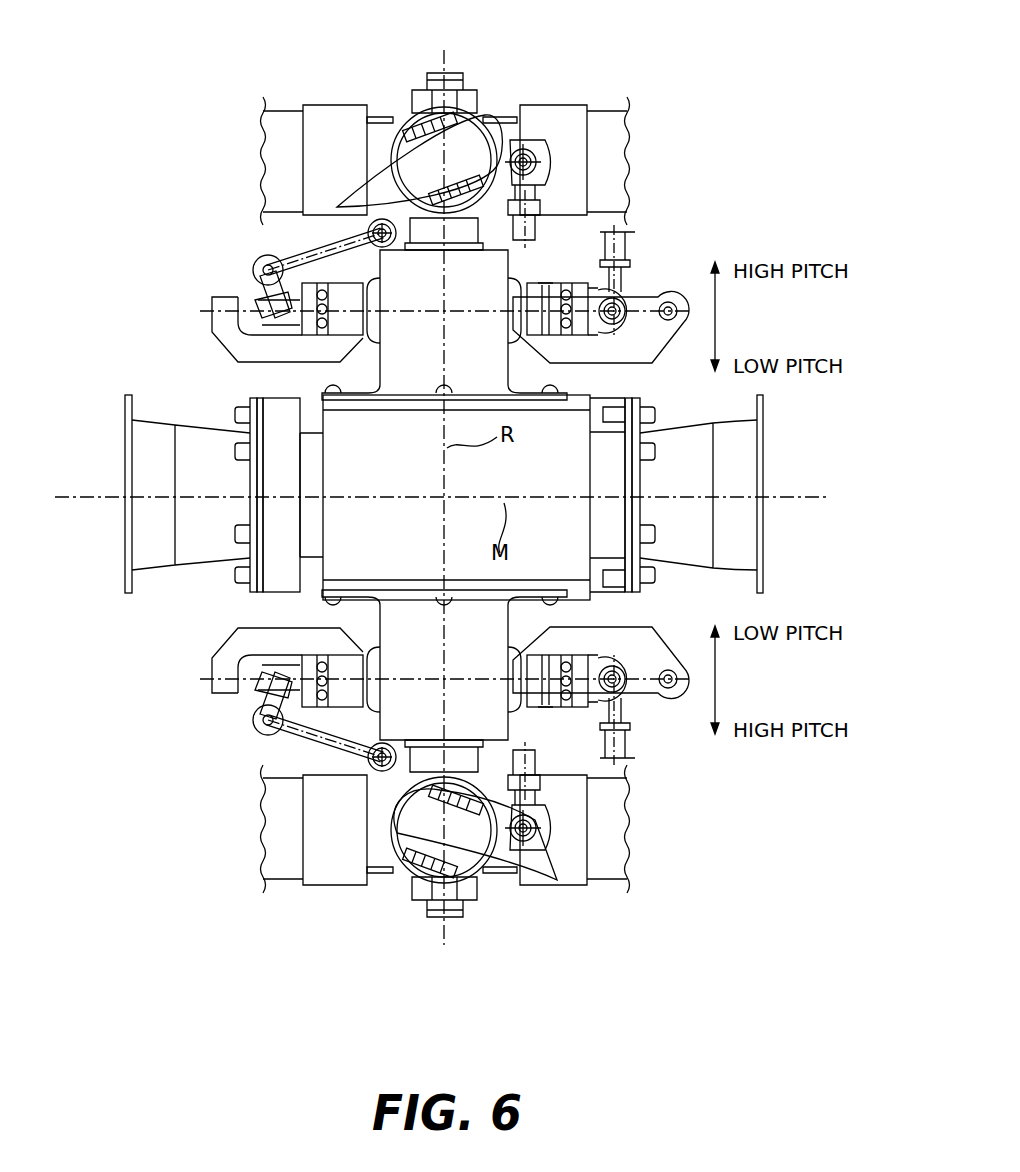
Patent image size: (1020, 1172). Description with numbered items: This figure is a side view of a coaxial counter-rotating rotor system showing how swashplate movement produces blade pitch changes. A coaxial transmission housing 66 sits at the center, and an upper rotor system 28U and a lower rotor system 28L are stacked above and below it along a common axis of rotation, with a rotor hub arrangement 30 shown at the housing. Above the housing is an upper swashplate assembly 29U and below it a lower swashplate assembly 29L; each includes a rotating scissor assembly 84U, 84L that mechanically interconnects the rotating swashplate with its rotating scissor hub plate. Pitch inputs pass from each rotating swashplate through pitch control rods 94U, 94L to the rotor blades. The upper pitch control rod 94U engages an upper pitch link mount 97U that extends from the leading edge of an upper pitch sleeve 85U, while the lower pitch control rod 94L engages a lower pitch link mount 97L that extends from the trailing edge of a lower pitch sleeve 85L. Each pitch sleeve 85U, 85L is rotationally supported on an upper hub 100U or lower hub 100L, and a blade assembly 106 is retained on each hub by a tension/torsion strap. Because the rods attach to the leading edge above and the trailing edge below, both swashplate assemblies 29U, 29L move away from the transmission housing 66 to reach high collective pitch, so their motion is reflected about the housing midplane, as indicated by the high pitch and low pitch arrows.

The upper rotor system 28U is at (688, 123).
The lower rotor system 28L is at (688, 834).
The upper swashplate assembly 29U is at (161, 316).
The lower swashplate assembly 29L is at (171, 682).
The rotor hub 30 is at (208, 599).
The coaxial transmission housing 66 is at (397, 463).
The upper rotating scissor assembly 84U is at (266, 258).
The lower rotating scissor assembly 84L is at (266, 733).
The upper pitch sleeve 85U is at (455, 112).
The lower pitch sleeve 85L is at (478, 882).
The upper pitch control rod 94U is at (536, 228).
The lower pitch control rod 94L is at (540, 762).
The upper pitch link mount 97U is at (530, 150).
The lower pitch link mount 97L is at (548, 858).
The upper hub 100U is at (395, 113).
The lower hub 100L is at (393, 878).
The blade assembly 106 is at (467, 172).